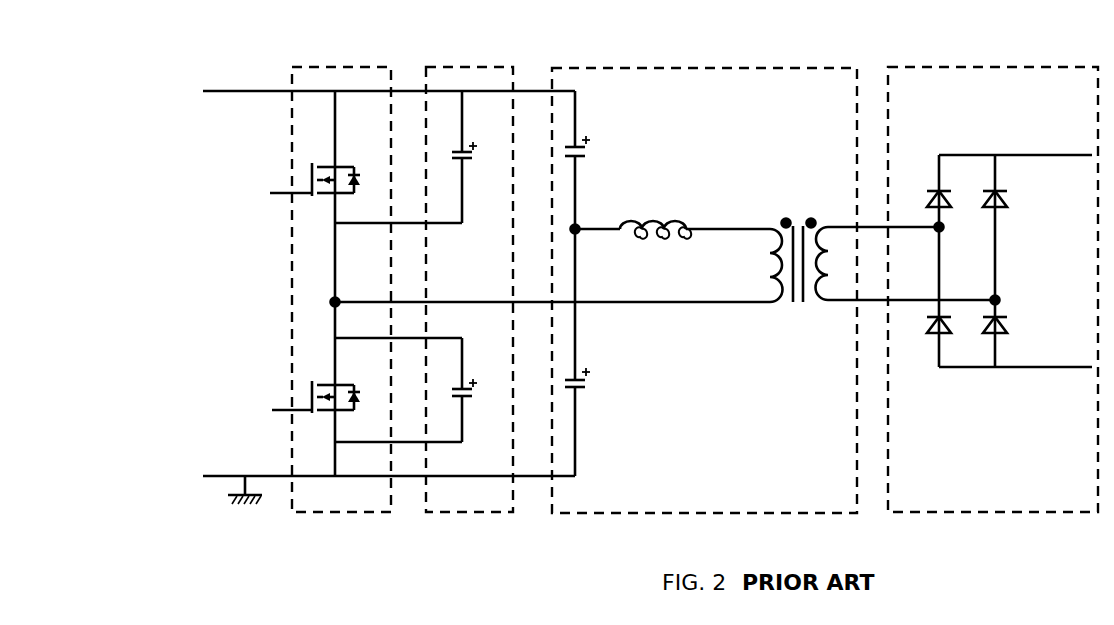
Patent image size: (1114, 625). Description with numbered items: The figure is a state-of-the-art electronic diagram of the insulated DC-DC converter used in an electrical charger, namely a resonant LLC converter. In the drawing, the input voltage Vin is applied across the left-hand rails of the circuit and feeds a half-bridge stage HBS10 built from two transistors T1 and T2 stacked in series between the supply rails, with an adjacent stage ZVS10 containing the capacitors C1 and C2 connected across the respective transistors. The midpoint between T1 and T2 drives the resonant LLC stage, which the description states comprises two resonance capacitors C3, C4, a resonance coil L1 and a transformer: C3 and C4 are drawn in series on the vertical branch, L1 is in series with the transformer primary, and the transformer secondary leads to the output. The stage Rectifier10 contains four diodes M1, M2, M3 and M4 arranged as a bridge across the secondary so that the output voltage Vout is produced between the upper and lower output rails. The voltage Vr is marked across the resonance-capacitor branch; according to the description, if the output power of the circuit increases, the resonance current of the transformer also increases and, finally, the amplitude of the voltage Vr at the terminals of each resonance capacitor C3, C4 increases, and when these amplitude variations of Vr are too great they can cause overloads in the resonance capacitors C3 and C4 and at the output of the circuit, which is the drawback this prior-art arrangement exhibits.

The half-bridge switching stage HBS10 is at (341, 276).
The zero-voltage switching capacitor stage ZVS10 is at (469, 277).
The resonant LLC converter LLC is at (704, 276).
The rectifier stage Rectifier10 is at (993, 274).
The first transistor T1 is at (316, 170).
The second transistor T2 is at (316, 387).
The first capacitor C1 is at (413, 157).
The second capacitor C2 is at (413, 390).
The resonance capacitor C3 is at (583, 196).
The resonance capacitor C4 is at (583, 389).
The resonance coil L1 is at (672, 243).
The first rectifier diode / ground node M1 is at (585, 341).
The second rectifier diode M2 is at (924, 297).
The third rectifier diode M3 is at (1006, 227).
The fourth rectifier diode M4 is at (1006, 333).
The input voltage Vin is at (213, 462).
The voltage at the terminals of each resonance capacitor Vr is at (618, 449).
The output voltage Vout is at (1080, 350).